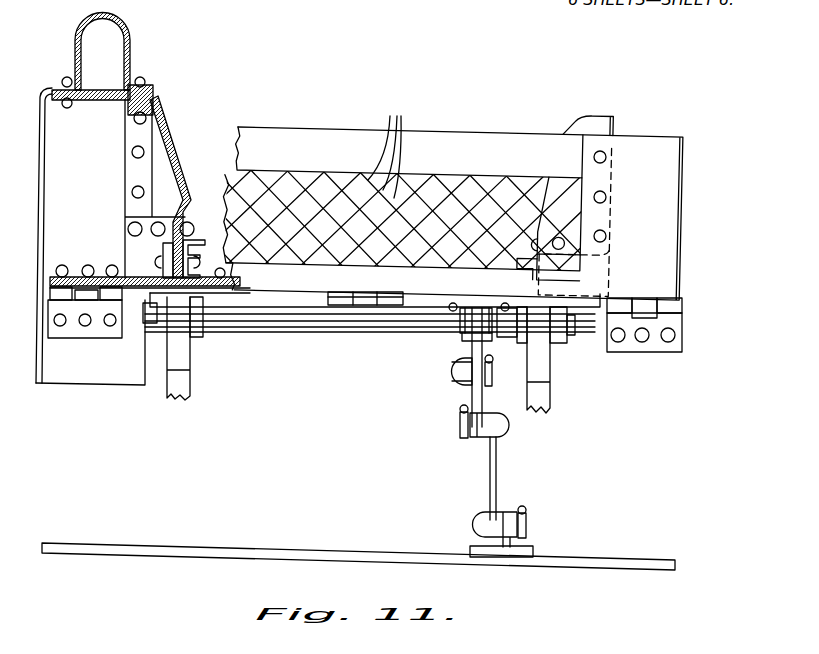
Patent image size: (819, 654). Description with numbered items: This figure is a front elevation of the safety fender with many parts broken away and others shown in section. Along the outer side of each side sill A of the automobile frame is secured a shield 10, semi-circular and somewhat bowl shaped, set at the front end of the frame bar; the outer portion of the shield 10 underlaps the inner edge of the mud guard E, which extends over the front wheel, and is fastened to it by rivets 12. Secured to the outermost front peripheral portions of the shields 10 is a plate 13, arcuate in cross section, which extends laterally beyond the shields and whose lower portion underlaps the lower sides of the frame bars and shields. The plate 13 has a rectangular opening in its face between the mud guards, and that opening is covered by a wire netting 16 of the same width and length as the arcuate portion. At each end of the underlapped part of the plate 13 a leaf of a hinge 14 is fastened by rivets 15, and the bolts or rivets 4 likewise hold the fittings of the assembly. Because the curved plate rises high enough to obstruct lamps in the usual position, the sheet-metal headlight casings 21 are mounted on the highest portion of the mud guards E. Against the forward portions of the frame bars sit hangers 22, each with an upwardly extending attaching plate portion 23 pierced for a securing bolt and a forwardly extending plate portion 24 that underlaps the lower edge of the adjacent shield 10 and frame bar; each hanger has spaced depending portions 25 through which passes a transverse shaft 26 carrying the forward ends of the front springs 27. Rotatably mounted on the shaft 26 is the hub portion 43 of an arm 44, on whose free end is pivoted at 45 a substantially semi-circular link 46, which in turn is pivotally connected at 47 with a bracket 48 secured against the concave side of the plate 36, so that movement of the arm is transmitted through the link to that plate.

The mud guards E is at (38, 94).
The sheet-metal headlight casings 21 is at (128, 34).
The shield 10 is at (176, 143).
The rivets 12 is at (133, 189).
The plate 13 is at (100, 265).
The rivets 15 is at (62, 265).
The attaching plate portion 23 is at (163, 250).
The side sills of automobile frame A is at (198, 242).
The hinge plate 4 is at (50, 290).
The forwardly extending plate portion 24 is at (233, 299).
The hinge 14 is at (365, 308).
The shaft 26 is at (290, 333).
The depending portions 25 is at (162, 335).
The front springs 27 is at (185, 393).
The hangers 22 is at (576, 310).
The hub portion 43 is at (476, 367).
The arm 44 is at (472, 346).
The pivot 45 is at (459, 423).
The semi-circular link 46 is at (498, 472).
The pivotal connection 47 is at (530, 524).
The bracket 48 is at (497, 552).
The plate 36 is at (190, 547).
The wire netting 16 is at (388, 144).